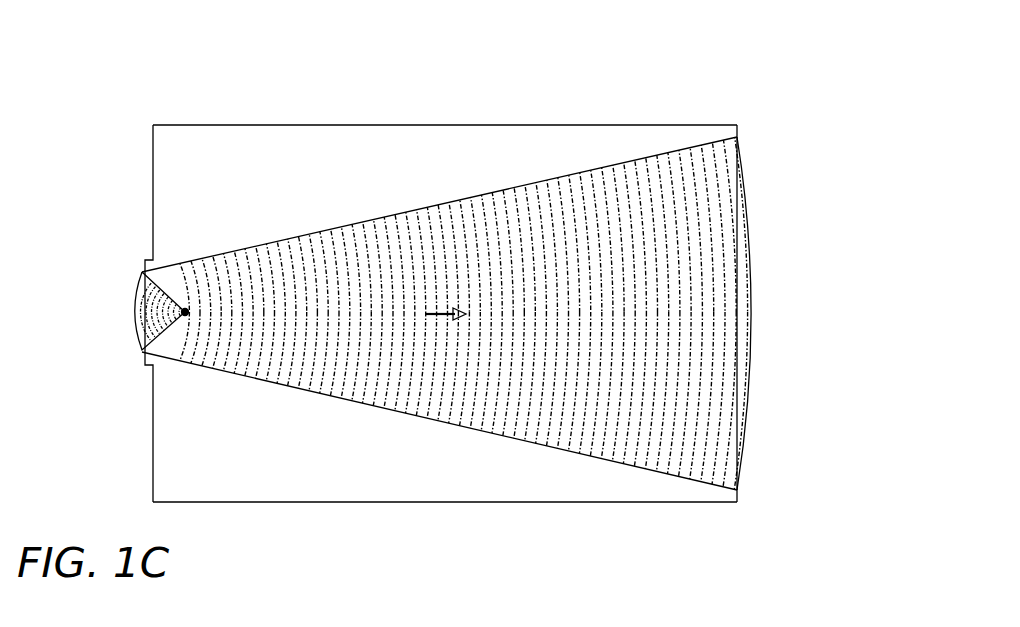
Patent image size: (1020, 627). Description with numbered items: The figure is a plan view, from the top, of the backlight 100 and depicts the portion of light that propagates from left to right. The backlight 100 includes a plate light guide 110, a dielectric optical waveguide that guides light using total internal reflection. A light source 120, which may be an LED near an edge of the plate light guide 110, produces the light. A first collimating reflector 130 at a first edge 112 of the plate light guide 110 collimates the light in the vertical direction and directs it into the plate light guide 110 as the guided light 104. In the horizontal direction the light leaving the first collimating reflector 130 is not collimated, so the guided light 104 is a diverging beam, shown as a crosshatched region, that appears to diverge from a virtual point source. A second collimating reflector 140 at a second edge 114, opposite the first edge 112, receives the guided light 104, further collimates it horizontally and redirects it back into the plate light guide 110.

The backlight 100 is at (736, 58).
The guided light 104 is at (578, 457).
The plate light guide 110 is at (363, 464).
The first edge 112 is at (139, 165).
The second edge 114 is at (754, 165).
The light source 120 is at (182, 300).
The first collimating reflector 130 is at (120, 336).
The second collimating reflector 140 is at (762, 335).